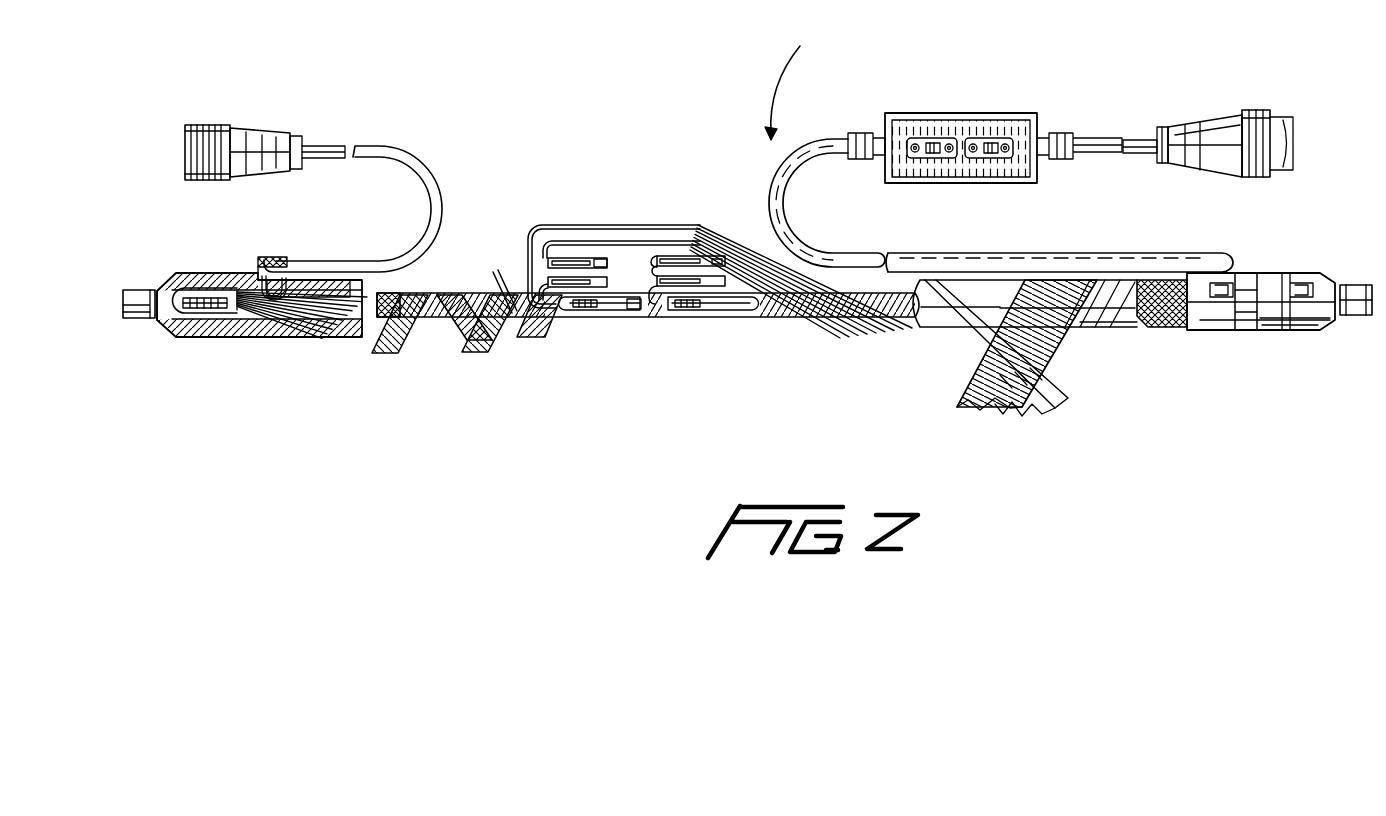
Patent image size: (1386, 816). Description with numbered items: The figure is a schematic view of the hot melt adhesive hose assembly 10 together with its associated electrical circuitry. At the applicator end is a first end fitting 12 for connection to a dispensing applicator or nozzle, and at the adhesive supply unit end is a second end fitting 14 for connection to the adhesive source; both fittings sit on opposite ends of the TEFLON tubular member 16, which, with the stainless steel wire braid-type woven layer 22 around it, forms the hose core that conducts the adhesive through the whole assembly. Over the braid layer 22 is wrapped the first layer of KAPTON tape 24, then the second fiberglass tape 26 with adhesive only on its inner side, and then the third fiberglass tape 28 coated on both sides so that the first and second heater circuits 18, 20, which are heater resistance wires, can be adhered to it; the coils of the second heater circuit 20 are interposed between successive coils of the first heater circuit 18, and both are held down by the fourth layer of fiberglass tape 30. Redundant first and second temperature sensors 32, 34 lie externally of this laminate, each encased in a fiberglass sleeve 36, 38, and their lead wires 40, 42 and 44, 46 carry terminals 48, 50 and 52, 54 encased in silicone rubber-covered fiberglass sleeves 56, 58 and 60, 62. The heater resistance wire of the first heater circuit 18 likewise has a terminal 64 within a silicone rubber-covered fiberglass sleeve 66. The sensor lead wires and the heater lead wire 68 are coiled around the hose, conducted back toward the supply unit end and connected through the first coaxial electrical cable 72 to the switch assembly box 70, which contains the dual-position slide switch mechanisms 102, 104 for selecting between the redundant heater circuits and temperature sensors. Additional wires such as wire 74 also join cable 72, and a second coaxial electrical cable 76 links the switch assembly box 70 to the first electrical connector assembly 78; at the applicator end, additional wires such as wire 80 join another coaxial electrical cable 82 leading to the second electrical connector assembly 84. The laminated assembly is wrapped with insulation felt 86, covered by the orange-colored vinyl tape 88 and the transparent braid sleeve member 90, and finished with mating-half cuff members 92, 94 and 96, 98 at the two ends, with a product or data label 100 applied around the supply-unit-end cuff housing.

The hot melt adhesive hose assembly 10 is at (791, 81).
The first end fitting 12 is at (145, 296).
The second end fitting 14 is at (1357, 277).
The tubular member 16 is at (147, 320).
The first heater circuit 18 is at (503, 292).
The second heater circuit 20 is at (495, 268).
The stainless steel wire braid-type woven layer 22 is at (393, 299).
The first layer of KAPTON tape 24 is at (377, 357).
The second fiberglass tape 26 is at (457, 333).
The third fiberglass tape 28 is at (470, 355).
The fourth layer of fiberglass tape 30 is at (355, 297).
The first temperature sensor 32 is at (598, 310).
The second temperature sensor 34 is at (714, 310).
The fiberglass sleeve 36 is at (575, 308).
The fiberglass sleeve 38 is at (684, 310).
The lead wire 40 is at (622, 230).
The lead wire 42 is at (587, 240).
The lead wire 44 is at (694, 255).
The lead wire 46 is at (651, 260).
The terminal 48 is at (573, 259).
The terminal 50 is at (550, 279).
The terminal 52 is at (709, 262).
The terminal 54 is at (688, 278).
The silicone rubber-covered fiberglass sleeve 56 is at (598, 264).
The silicone rubber-covered fiberglass sleeve 58 is at (624, 310).
The silicone rubber-covered fiberglass sleeve 60 is at (773, 243).
The silicone rubber-covered fiberglass sleeve 62 is at (773, 315).
The terminal 64 is at (217, 308).
The silicone rubber-covered fiberglass sleeve 66 is at (237, 312).
The lead wire 68 is at (198, 297).
The switch assembly box 70 is at (980, 113).
The first coaxial electrical cable 72 is at (1042, 265).
The wire 74 is at (887, 340).
The second coaxial electrical cable 76 is at (1142, 142).
The first electrical connector assembly 78 is at (1213, 137).
The wire 80 is at (327, 344).
The coaxial electrical cable 82 is at (437, 166).
The second electrical connector assembly 84 is at (245, 140).
The insulation felt 86 is at (970, 336).
The orange-colored vinyl tape 88 is at (987, 378).
The transparent braid sleeve member 90 is at (1157, 322).
The cuff member 92 is at (205, 279).
The cuff member 94 is at (203, 333).
The cuff member 96 is at (1307, 268).
The cuff member 98 is at (1293, 320).
The product or data label 100 is at (1267, 270).
The dual-position slide switch mechanism 102 is at (912, 137).
The dual-position slide switch mechanism 104 is at (1000, 138).